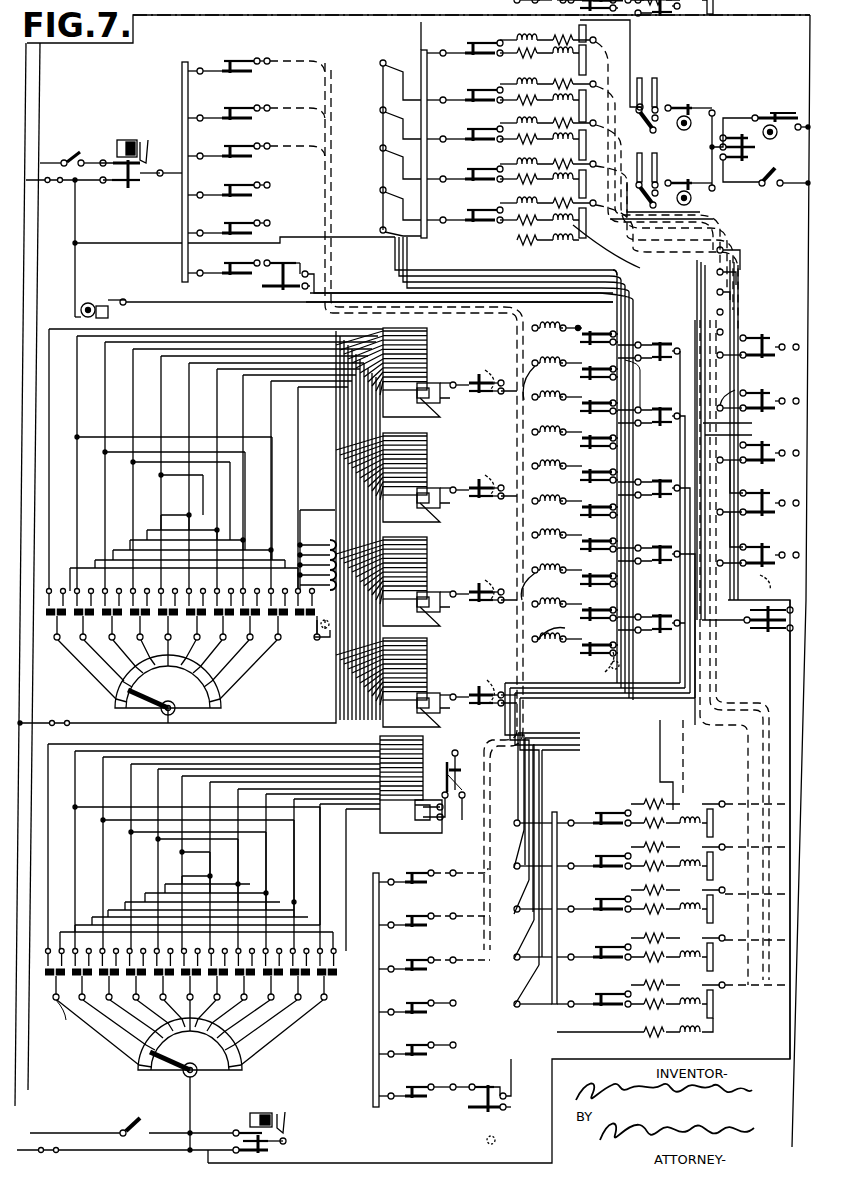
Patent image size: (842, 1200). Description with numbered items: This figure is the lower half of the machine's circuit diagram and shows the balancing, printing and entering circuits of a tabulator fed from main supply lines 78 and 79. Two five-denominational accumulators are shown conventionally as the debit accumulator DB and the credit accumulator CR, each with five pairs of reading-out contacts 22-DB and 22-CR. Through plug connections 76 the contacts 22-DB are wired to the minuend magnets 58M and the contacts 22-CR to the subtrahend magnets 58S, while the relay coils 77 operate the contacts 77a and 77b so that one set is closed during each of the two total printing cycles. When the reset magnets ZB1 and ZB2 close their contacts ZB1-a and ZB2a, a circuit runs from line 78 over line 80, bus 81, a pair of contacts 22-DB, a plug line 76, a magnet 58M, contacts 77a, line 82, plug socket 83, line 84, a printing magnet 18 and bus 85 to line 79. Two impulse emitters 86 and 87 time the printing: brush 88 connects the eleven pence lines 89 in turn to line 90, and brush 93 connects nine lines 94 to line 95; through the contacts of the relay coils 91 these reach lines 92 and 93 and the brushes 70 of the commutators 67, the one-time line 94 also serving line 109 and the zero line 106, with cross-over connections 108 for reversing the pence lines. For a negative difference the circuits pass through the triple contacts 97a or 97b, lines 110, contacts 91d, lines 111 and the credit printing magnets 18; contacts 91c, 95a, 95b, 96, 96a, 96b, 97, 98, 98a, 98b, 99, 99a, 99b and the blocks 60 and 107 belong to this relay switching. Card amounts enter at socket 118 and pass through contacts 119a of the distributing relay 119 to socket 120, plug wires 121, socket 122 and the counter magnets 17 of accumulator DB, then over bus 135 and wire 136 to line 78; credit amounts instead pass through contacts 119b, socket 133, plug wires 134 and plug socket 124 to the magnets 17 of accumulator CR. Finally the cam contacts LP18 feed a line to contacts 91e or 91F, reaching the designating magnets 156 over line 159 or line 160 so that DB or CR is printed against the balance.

The counter magnet 17 is at (525, 212).
The printing magnet 18 is at (677, 822).
The reading-out contacts of the credit accumulator 22-CR is at (404, 1052).
The reading-out contacts of the debit accumulator 22-DB is at (228, 110).
The minuend magnet 58M is at (557, 311).
The subtrahend magnet 58S is at (551, 499).
The translator block 60 is at (430, 410).
The commutator 67 is at (405, 322).
The brushes 70 is at (350, 325).
The plug connections 76 is at (328, 99).
The multi-contact relay coil 77 is at (598, 679).
The relay contacts 77a is at (572, 650).
The relay contacts 77b is at (593, 508).
The main supply line 78 is at (26, 287).
The main supply line 79 is at (808, 292).
The line 80 is at (66, 183).
The bus 81 is at (182, 82).
The line 82 is at (414, 250).
The plug socket 83 is at (396, 108).
The line 84 is at (452, 50).
The bus 85 is at (672, 214).
The impulse emitter 86 is at (240, 1064).
The impulse emitter 87 is at (213, 703).
The brush 88 is at (160, 1070).
The lines 89 is at (92, 1025).
The line 90 is at (192, 1125).
The relay coil 91 is at (322, 640).
The contacts 91c is at (675, 340).
The contacts 91d is at (672, 362).
The contacts 91e is at (780, 606).
The contacts 91F is at (778, 636).
The lines 92 is at (58, 818).
The lines 93 is at (60, 470).
The lines 94 is at (90, 675).
The line 95 is at (76, 726).
The relay contact 95a is at (458, 767).
The relay contact 95b is at (444, 818).
The relay 96 is at (478, 683).
The relay contact 96a is at (465, 690).
The relay contact 96b is at (470, 690).
The relay 97 is at (486, 580).
The triple contacts 97a is at (475, 604).
The triple contacts 97b is at (472, 586).
The relay 98 is at (486, 475).
The relay contact 98a is at (475, 500).
The relay contact 98b is at (472, 482).
The relay 99 is at (486, 372).
The relay contact 99a is at (475, 396).
The relay contact 99b is at (472, 379).
The zero line 106 is at (325, 540).
The wiring matrix 107 is at (145, 530).
The cross-over connections 108 is at (165, 885).
The line 109 is at (316, 543).
The lines 110 is at (548, 698).
The lines 111 is at (545, 768).
The socket 118 is at (796, 325).
The distributing relay 119 is at (760, 576).
The normally closed contacts 119a is at (775, 345).
The contacts 119b is at (780, 390).
The socket 120 is at (728, 254).
The plug wires 121 is at (640, 57).
The socket 122 is at (600, 40).
The plug socket 124 is at (722, 803).
The plug socket 133 is at (738, 392).
The plug wires 134 is at (710, 727).
The bus 135 is at (421, 48).
The wire 136 is at (296, 237).
The printing magnet 156 is at (708, 1046).
The line 159 is at (752, 446).
The line 160 is at (790, 686).
The credit accumulator CR is at (652, 529).
The debit accumulator DB is at (531, 147).
The cam contacts LP18 is at (108, 312).
The reset magnet ZB1 is at (122, 145).
The contacts ZB1-a is at (140, 176).
The reset magnet ZB2 is at (260, 1112).
The contacts ZB2a is at (272, 1150).